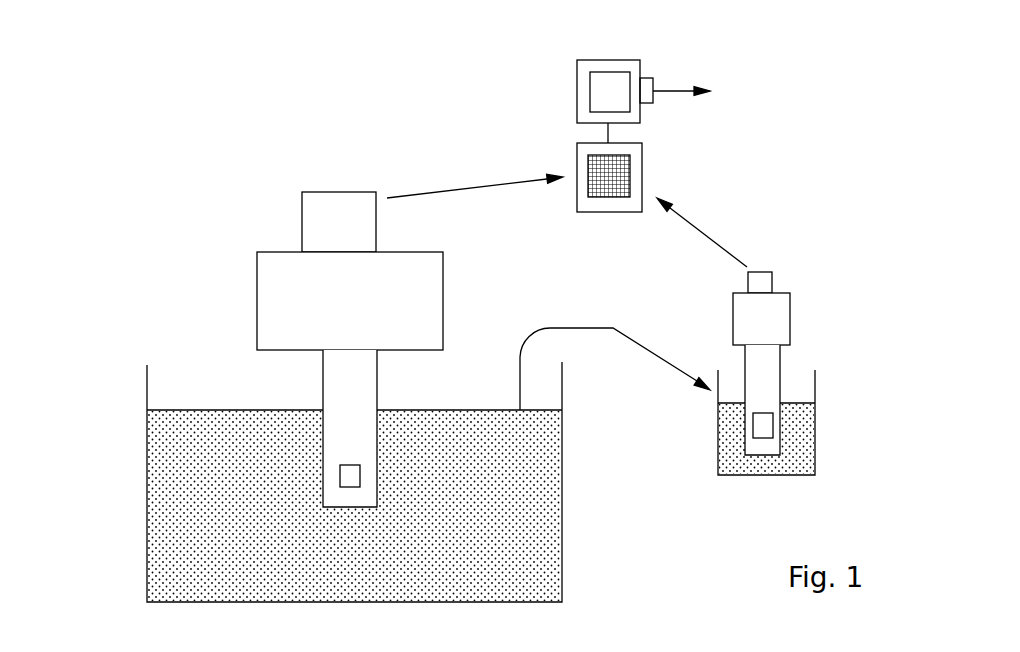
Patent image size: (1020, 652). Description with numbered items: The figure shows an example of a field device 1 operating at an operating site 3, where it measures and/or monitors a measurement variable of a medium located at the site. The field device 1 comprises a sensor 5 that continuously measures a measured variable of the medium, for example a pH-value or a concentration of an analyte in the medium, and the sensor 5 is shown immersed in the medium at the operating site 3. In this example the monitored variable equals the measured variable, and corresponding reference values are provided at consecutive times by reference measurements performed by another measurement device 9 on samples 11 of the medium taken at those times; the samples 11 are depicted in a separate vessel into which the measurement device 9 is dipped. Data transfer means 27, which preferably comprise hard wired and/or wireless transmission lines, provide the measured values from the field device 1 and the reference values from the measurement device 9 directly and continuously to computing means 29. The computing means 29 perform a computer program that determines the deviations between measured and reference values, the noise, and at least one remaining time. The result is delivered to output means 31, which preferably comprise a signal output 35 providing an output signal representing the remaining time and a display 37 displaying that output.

The field device 1 is at (309, 326).
The operating site 3 is at (115, 389).
The sensor 5 is at (352, 478).
The measurement device 9 is at (804, 274).
The samples 11 is at (733, 453).
The data transfer means 27 is at (482, 185).
The computing means 29 is at (642, 173).
The output means 31 is at (615, 69).
The signal output 35 is at (647, 88).
The display 37 is at (605, 72).